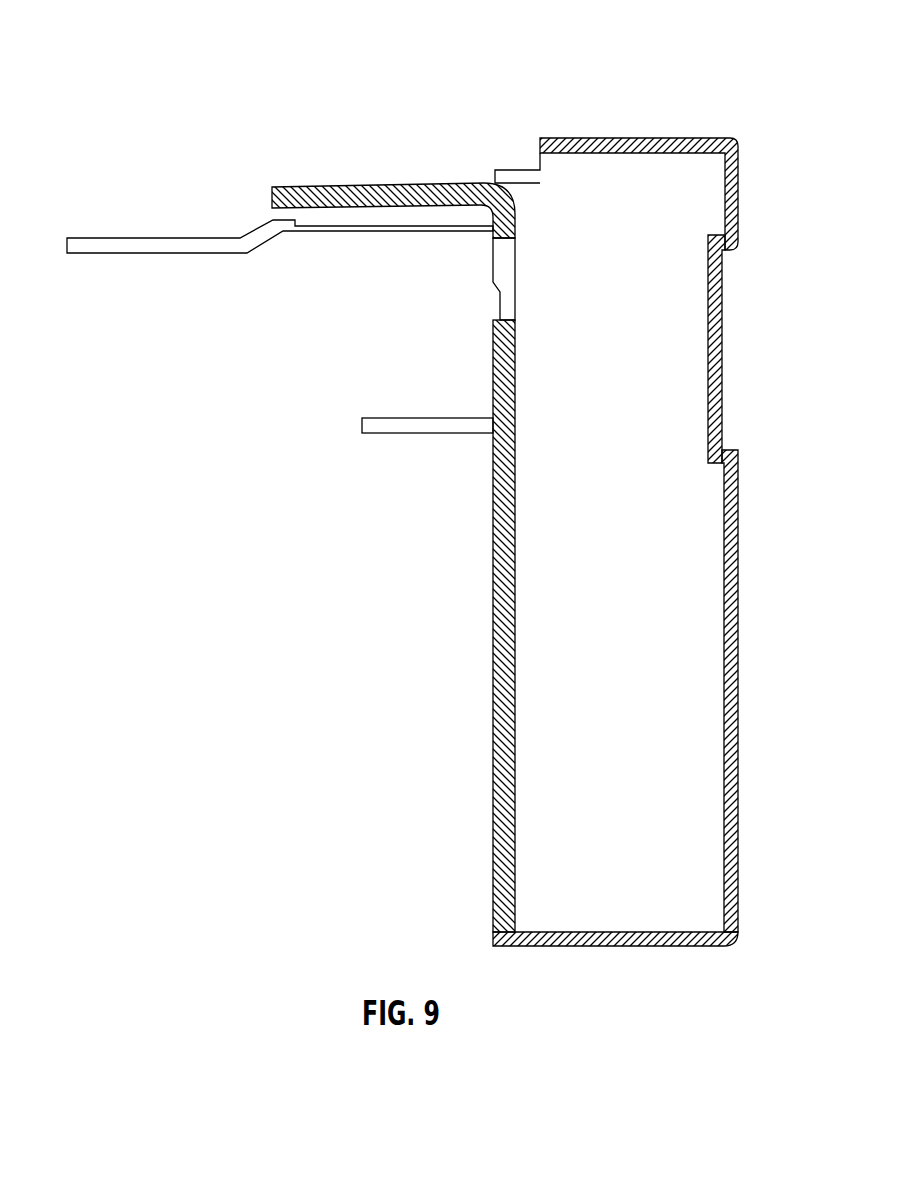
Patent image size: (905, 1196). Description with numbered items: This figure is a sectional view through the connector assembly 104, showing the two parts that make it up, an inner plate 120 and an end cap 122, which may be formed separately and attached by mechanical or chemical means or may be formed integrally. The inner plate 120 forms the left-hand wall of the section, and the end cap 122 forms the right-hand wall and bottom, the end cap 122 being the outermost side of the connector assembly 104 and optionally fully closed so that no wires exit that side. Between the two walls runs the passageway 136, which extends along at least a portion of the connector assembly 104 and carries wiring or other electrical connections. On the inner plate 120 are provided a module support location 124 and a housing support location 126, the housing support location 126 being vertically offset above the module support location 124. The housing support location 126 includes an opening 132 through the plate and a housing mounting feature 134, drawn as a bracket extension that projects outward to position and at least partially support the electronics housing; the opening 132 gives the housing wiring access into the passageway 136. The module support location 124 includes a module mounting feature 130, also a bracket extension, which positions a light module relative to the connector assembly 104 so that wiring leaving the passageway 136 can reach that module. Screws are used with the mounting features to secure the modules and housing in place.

The connector assembly 104 is at (752, 60).
The inner plate 120 is at (493, 762).
The end cap 122 is at (735, 573).
The module support location 124 is at (307, 365).
The housing support location 126 is at (287, 145).
The module mounting feature 130 is at (468, 417).
The opening 132 is at (507, 277).
The housing mounting feature 134 is at (137, 237).
The passageway 136 is at (684, 380).